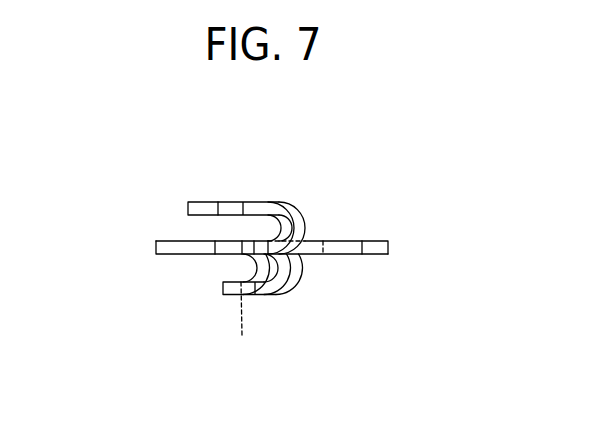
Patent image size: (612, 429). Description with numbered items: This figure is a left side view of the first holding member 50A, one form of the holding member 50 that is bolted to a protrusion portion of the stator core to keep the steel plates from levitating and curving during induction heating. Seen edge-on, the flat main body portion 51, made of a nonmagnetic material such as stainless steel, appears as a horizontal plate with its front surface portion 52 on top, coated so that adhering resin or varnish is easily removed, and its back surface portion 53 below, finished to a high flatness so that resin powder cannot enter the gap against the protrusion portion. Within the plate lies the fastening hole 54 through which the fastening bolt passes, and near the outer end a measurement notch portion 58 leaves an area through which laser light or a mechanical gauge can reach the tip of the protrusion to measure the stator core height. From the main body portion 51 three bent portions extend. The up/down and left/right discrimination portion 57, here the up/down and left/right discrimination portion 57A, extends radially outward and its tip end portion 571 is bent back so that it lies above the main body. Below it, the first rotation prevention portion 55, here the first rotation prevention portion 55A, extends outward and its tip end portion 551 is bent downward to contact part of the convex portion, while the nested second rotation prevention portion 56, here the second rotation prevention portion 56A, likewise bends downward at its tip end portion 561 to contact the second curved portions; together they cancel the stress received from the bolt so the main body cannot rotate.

The holding member 50 is at (276, 251).
The first holding member 50A is at (413, 198).
The main body portion 51 is at (374, 233).
The front surface portion 52 is at (157, 241).
The back surface portion 53 is at (159, 255).
The fastening hole 54 is at (323, 241).
The first rotation prevention portion 55 is at (296, 331).
The first rotation prevention portion 55A is at (289, 292).
The tip end portion 551 is at (242, 335).
The second rotation prevention portion 56 is at (161, 319).
The second rotation prevention portion 56A is at (250, 267).
The tip end portion 561 is at (224, 293).
The up/down and left/right discrimination portion 57 is at (201, 183).
The up/down and left/right discrimination portion 57A is at (203, 202).
The tip end portion 571 is at (188, 203).
The measurement notch portion 58 is at (363, 255).